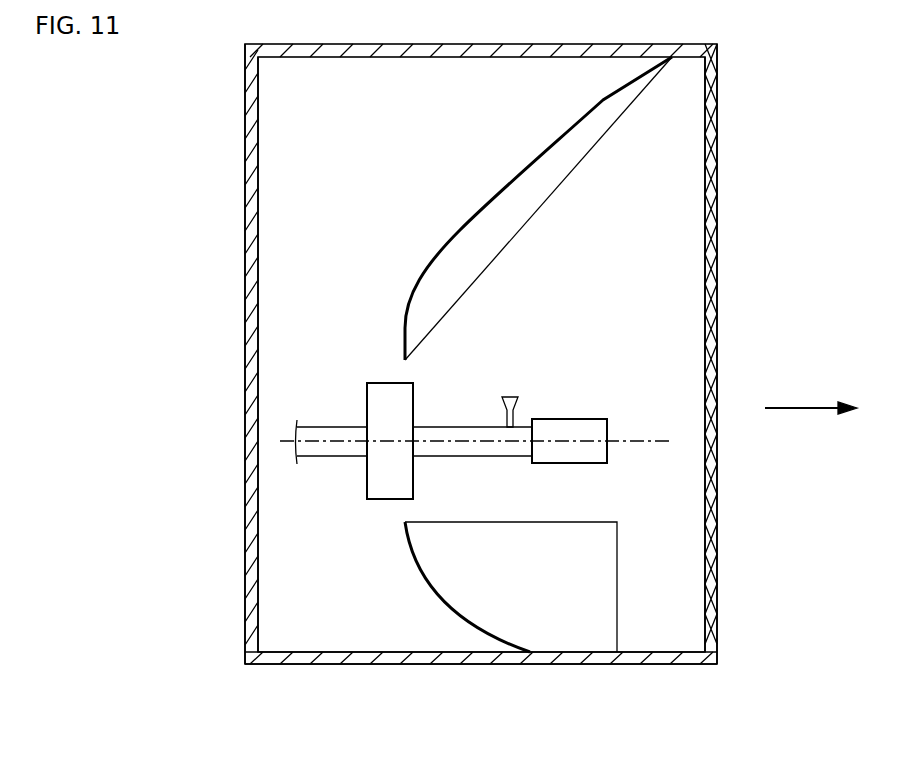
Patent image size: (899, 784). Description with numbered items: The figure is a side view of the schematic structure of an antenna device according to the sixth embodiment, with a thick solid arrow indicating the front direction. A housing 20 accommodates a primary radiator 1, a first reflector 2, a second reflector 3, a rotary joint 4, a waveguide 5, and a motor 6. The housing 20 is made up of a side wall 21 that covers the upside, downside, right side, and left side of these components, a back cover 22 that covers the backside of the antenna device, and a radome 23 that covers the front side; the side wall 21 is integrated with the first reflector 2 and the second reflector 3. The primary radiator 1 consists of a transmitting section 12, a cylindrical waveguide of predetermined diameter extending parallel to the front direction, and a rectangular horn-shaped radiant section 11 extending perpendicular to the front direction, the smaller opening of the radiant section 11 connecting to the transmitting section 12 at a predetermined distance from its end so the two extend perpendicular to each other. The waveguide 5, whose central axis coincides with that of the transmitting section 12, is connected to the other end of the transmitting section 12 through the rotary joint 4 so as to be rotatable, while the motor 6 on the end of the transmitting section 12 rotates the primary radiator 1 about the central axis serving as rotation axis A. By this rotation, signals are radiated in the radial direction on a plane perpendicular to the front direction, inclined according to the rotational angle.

The primary radiator 1 is at (487, 442).
The first reflector 2 is at (460, 232).
The second reflector 3 is at (445, 598).
The rotary joint 4 is at (378, 496).
The waveguide 5 is at (338, 432).
The motor 6 is at (603, 430).
The radiant section 11 is at (518, 410).
The transmitting section 12 is at (460, 432).
The housing 20 is at (500, 708).
The side wall 21 is at (452, 657).
The back cover 22 is at (252, 458).
The radome 23 is at (712, 494).